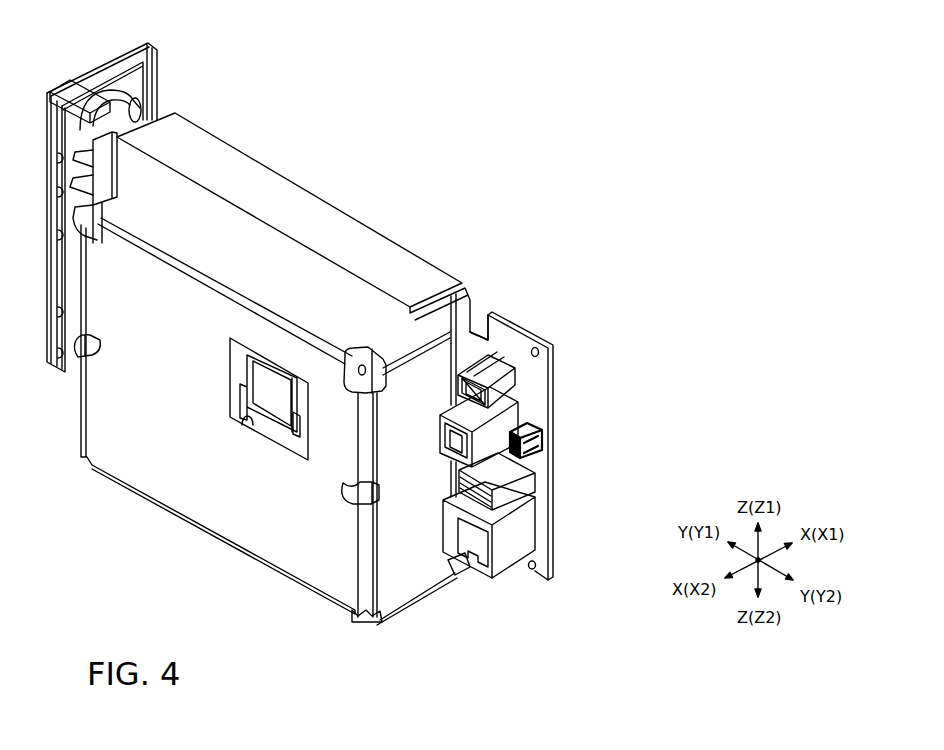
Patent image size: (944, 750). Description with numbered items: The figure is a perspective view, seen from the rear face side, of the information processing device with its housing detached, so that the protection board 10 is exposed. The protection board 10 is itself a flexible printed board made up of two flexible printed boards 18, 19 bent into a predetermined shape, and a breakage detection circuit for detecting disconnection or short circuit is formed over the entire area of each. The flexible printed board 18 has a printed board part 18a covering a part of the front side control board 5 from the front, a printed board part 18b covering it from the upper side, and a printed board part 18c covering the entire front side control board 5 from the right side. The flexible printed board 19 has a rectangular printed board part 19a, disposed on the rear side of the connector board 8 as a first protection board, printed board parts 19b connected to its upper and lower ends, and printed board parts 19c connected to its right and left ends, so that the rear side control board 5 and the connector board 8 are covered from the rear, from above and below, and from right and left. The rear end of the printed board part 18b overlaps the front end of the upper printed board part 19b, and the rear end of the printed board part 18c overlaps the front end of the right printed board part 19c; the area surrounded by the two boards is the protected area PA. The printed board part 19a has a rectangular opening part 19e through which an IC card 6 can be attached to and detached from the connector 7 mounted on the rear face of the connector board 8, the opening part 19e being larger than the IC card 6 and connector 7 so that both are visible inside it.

The control board 5 is at (558, 421).
The IC card 6 is at (243, 372).
The connector 7 is at (242, 386).
The connector board 8 is at (298, 450).
The protection board 10 is at (79, 417).
The flexible printed board 18 is at (301, 268).
The printed board part 18a is at (465, 282).
The printed board part 18b is at (235, 163).
The printed board part 18c is at (95, 85).
The flexible printed board 19 is at (287, 380).
The printed board part 19a is at (223, 530).
The printed board part 19b is at (307, 277).
The printed board part 19c is at (410, 594).
The opening part 19e is at (255, 423).
The protected area PA is at (453, 310).